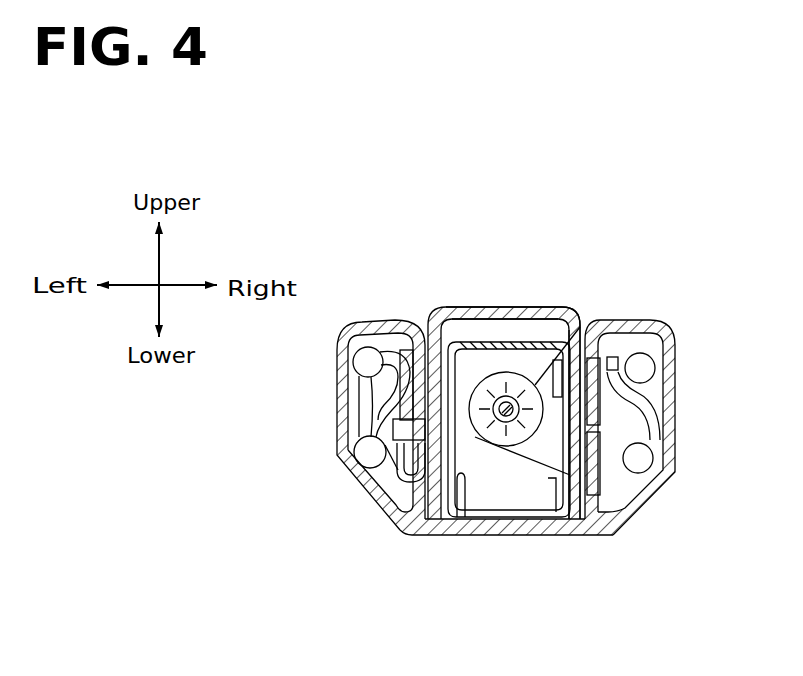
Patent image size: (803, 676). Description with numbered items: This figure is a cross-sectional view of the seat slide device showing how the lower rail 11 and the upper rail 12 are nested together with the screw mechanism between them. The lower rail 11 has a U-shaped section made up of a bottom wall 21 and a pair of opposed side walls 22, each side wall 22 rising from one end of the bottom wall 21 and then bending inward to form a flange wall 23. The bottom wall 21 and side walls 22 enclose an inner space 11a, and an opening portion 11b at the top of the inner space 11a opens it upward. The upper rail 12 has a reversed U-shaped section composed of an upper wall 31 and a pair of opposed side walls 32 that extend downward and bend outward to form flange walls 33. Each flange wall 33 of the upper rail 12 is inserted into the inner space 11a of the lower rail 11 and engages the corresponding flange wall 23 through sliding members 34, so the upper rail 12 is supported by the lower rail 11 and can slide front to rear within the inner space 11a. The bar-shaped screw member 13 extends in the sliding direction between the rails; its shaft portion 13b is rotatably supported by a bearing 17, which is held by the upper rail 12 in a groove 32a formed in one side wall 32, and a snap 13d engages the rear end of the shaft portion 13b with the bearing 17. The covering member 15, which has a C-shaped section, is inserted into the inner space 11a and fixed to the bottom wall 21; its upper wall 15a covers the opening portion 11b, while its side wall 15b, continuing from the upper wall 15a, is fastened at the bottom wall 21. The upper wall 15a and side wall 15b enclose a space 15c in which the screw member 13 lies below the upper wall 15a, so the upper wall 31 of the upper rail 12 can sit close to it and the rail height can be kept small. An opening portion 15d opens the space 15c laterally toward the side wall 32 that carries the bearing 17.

The lower rail 11 is at (370, 320).
The inner space 11a is at (409, 450).
The opening portion 11b is at (425, 322).
The upper rail 12 is at (572, 304).
The screw member 13 is at (527, 470).
The shaft portion 13b is at (509, 429).
The snap 13d is at (580, 327).
The covering member 15 is at (478, 333).
The upper wall 15a is at (548, 333).
The side wall 15b is at (467, 530).
The space 15c is at (518, 497).
The opening portion 15d is at (546, 490).
The bearing 17 is at (516, 420).
The bottom wall 21 is at (412, 532).
The side walls 22 is at (343, 410).
The flange wall 23 is at (624, 348).
The upper wall 31 is at (508, 335).
The side walls 32 is at (598, 413).
The groove 32a is at (590, 478).
The flange wall 33 is at (638, 422).
The sliding members 34 is at (647, 368).